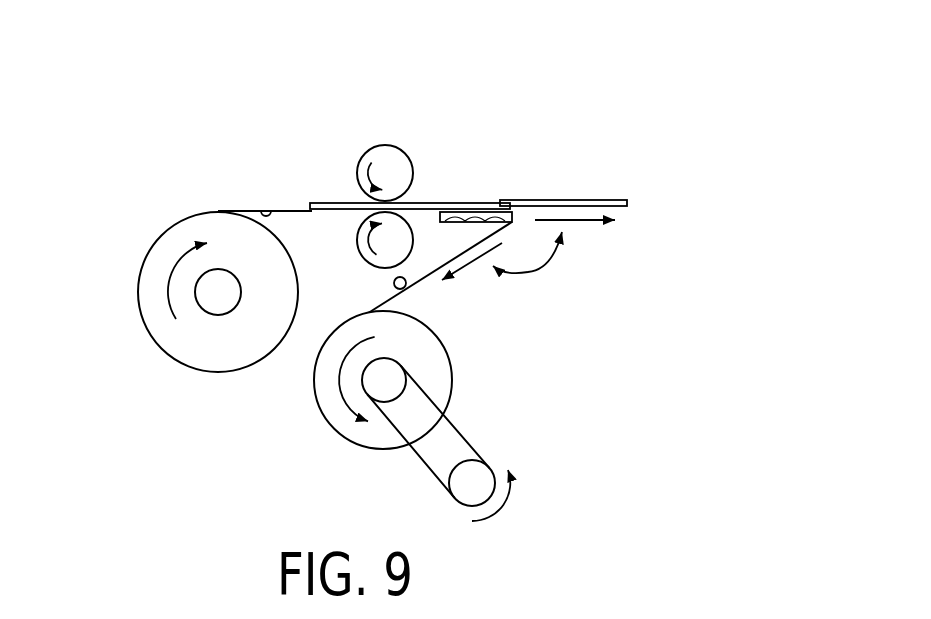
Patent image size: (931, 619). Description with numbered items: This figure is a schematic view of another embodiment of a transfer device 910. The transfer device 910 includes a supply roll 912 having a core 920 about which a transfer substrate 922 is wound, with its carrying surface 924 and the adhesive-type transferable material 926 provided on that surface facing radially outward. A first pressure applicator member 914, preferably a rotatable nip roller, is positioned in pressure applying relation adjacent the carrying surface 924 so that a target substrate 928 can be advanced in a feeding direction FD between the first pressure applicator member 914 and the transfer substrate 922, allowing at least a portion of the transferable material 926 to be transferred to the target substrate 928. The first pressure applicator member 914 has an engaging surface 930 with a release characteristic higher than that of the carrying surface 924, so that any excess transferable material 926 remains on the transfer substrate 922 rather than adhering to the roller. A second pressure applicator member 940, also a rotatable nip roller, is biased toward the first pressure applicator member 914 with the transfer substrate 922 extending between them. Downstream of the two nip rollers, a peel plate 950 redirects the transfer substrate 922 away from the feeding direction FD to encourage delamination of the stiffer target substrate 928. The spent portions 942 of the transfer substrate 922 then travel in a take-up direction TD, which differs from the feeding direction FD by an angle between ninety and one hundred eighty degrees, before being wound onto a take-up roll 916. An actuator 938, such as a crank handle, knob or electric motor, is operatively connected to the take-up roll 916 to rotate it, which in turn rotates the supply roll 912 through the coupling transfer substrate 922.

The transfer device 910 is at (102, 85).
The supply roll 912 is at (152, 297).
The core 920 is at (213, 307).
The carrying surface 924 is at (222, 200).
The transfer substrate 922 is at (264, 208).
The transferable material 926 is at (298, 210).
The first pressure applicator member 914 is at (392, 147).
The second pressure applicator member 940 is at (372, 258).
The engaging surface 930 is at (412, 190).
The peel plate 950 is at (505, 200).
The target substrate 928 is at (595, 198).
The spent portions 942 is at (405, 288).
The take-up roll 916 is at (427, 396).
The actuator 938 is at (433, 462).
The feeding direction FD is at (583, 223).
The take-up direction TD is at (467, 260).